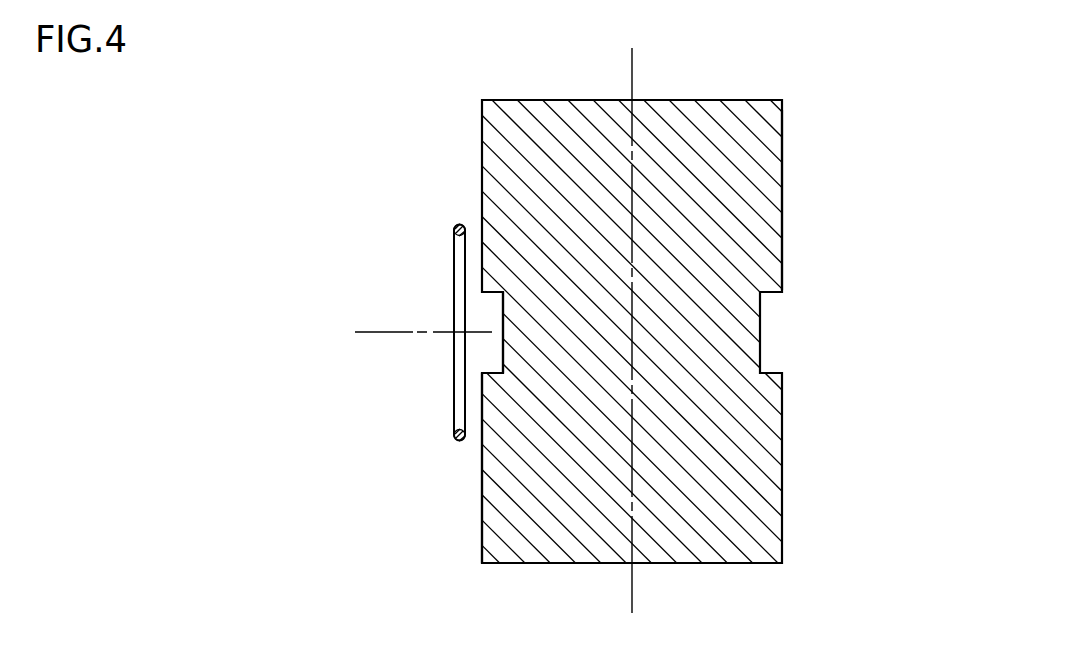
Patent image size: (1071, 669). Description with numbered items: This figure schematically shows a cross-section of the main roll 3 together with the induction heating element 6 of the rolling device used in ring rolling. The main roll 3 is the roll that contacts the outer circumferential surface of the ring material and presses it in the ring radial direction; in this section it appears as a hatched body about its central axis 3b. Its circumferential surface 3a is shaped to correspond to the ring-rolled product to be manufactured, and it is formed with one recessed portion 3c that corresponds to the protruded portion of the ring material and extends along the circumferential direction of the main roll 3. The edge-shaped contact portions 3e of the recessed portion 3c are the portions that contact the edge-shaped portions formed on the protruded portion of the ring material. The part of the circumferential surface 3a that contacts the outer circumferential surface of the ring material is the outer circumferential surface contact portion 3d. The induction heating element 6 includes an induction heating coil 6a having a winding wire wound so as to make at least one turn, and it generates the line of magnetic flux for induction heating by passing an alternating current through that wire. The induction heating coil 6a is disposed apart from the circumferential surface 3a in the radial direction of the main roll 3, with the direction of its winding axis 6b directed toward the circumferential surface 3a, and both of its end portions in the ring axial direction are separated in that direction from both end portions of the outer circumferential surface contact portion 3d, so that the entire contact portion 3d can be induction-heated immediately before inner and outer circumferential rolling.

The main roll 3 is at (505, 100).
The circumferential surface 3a is at (782, 180).
The central axis 3b is at (633, 75).
The recessed portion 3c is at (503, 326).
The outer circumferential surface contact portion 3d is at (482, 398).
The edge-shaped contact portions 3e is at (503, 292).
The induction heating element 6 is at (456, 224).
The induction heating coil 6a is at (455, 440).
The winding axis 6b is at (375, 332).